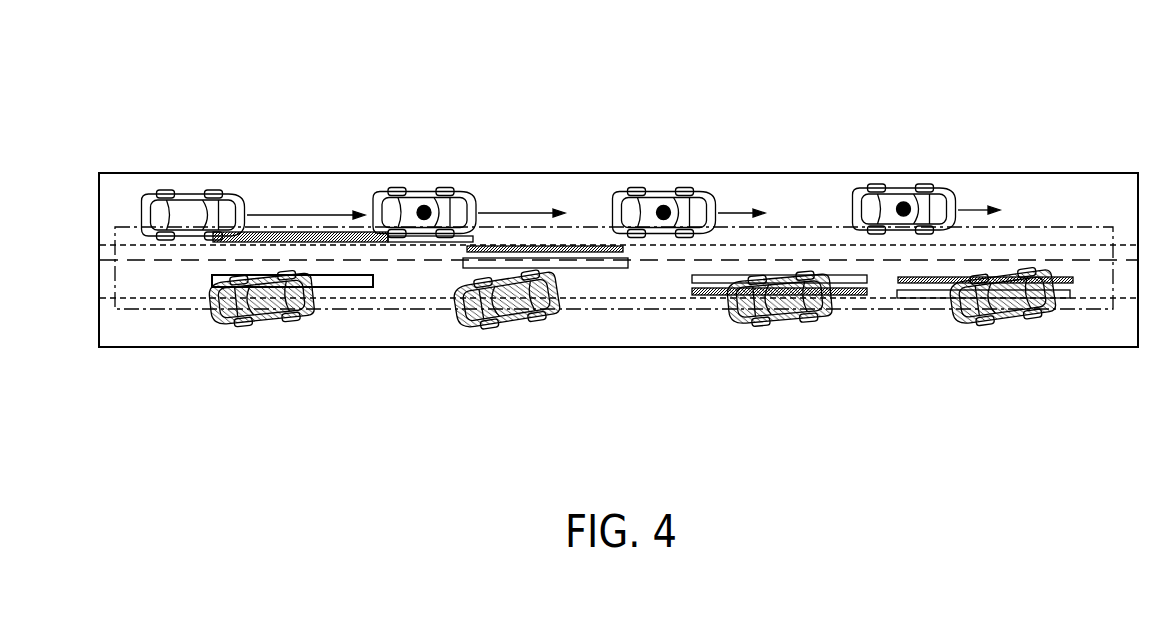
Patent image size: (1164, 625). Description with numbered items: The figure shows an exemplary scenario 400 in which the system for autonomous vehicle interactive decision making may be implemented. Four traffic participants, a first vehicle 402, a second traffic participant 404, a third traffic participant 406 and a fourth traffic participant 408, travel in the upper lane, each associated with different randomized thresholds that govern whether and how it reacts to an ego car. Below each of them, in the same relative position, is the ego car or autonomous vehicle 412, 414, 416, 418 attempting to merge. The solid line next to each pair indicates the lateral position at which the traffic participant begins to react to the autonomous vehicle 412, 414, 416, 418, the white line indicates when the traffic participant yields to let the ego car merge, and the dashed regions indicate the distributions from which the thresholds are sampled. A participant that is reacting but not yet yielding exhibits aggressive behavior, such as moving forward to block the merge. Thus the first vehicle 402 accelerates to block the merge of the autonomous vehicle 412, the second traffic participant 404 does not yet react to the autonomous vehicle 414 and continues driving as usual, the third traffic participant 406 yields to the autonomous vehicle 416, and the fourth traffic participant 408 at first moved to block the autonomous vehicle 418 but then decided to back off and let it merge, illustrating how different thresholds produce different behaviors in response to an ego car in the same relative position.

The exemplary scenario 400 is at (190, 72).
The first vehicle 402 is at (188, 192).
The second traffic participant 404 is at (422, 190).
The third traffic participant 406 is at (653, 190).
The fourth traffic participant 408 is at (898, 186).
The autonomous vehicle 412 is at (266, 322).
The autonomous vehicle 414 is at (507, 322).
The autonomous vehicle 416 is at (784, 322).
The autonomous vehicle 418 is at (1002, 320).